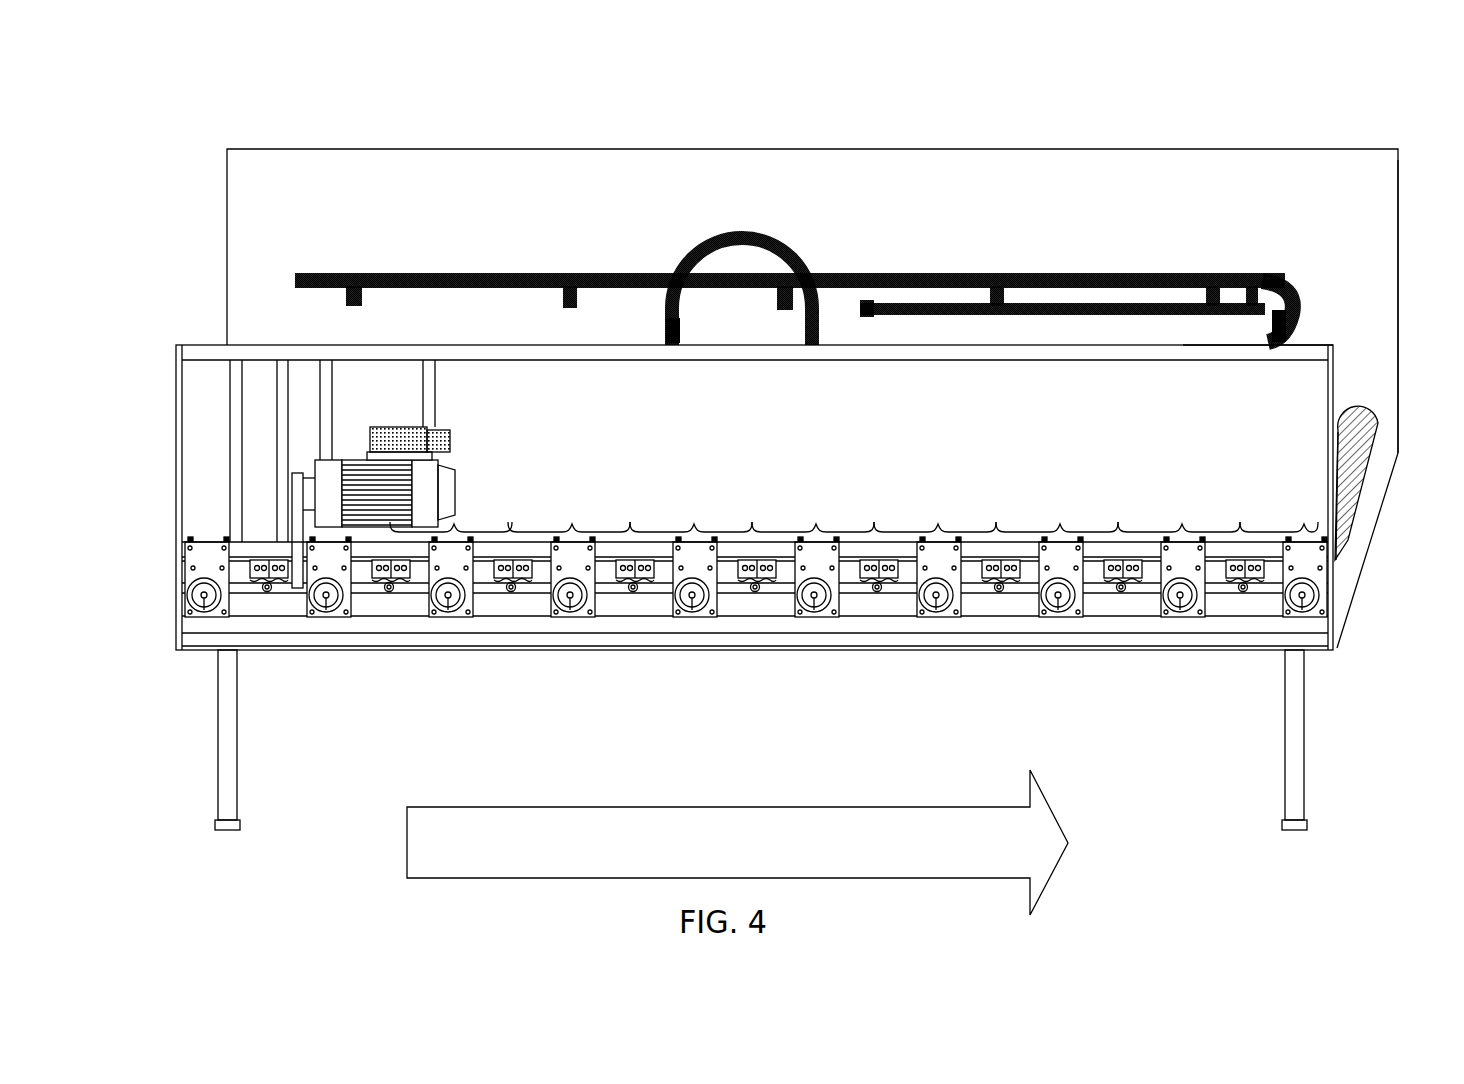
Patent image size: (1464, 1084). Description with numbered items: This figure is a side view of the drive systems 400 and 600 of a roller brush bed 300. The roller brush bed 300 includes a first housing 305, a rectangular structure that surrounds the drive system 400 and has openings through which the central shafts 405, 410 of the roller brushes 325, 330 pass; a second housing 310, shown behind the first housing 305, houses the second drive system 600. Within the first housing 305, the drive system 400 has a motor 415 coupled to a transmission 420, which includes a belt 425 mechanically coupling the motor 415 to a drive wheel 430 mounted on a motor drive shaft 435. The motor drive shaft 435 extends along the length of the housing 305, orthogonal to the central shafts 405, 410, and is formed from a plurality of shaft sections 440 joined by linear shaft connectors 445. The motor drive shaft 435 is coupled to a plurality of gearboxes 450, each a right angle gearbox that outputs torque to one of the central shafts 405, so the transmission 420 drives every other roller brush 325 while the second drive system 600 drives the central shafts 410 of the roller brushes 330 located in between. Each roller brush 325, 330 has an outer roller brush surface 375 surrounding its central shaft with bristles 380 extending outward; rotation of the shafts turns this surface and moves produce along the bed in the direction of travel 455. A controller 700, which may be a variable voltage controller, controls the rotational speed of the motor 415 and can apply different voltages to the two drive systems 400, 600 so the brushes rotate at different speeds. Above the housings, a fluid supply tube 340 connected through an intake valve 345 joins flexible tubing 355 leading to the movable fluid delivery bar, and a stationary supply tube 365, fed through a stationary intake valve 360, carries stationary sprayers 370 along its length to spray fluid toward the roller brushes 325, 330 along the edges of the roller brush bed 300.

The roller brush bed 300 is at (783, 488).
The first housing 305 is at (719, 497).
The second housing 310 is at (785, 301).
The roller brush 325 is at (1393, 544).
The roller brush 330 is at (1257, 339).
The fluid supply tube 340 is at (1062, 267).
The intake valve 345 is at (1314, 324).
The flexible tubing 355 is at (705, 249).
The stationary intake valve 360 is at (1308, 302).
The stationary supply tube 365 is at (790, 239).
The stationary sprayer 370 is at (815, 269).
The outer roller brush surface 375 is at (1393, 482).
The bristles 380 is at (1388, 470).
The drive system 400 is at (477, 459).
The central shaft 405 is at (725, 656).
The central shaft 410 is at (718, 657).
The motor 415 is at (477, 477).
The transmission 420 is at (215, 451).
The belt 425 is at (326, 451).
The drive wheel 430 is at (261, 530).
The motor drive shaft 435 is at (716, 573).
The shaft sections 440 is at (760, 567).
The linear shaft connectors 445 is at (756, 607).
The gearbox 450 is at (692, 592).
The direction of travel 455 is at (703, 842).
The second drive system 600 is at (1430, 299).
The controller 700 is at (404, 421).